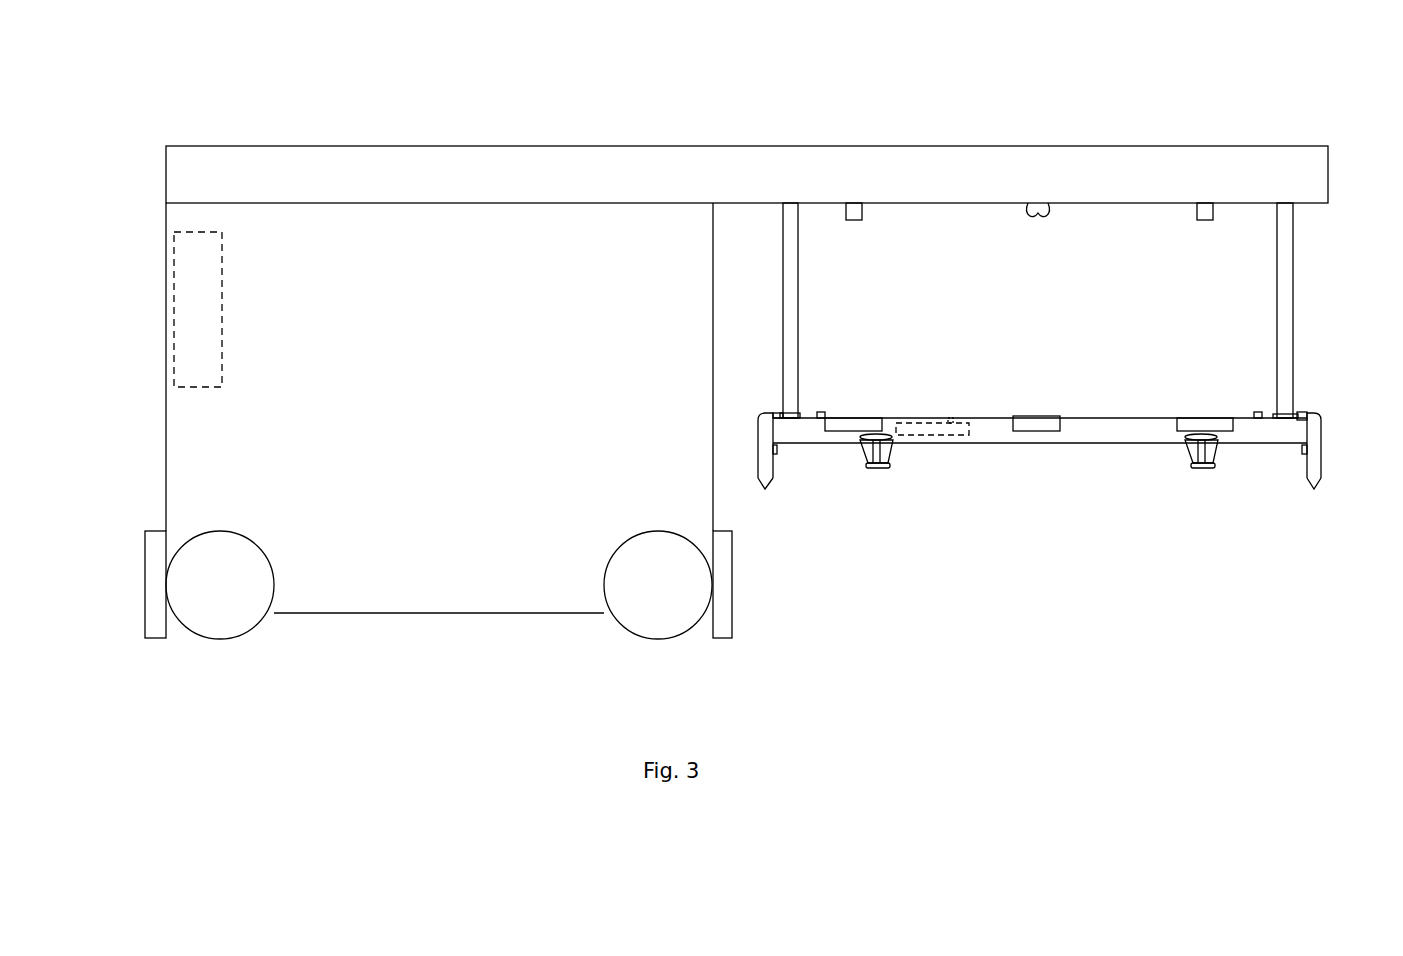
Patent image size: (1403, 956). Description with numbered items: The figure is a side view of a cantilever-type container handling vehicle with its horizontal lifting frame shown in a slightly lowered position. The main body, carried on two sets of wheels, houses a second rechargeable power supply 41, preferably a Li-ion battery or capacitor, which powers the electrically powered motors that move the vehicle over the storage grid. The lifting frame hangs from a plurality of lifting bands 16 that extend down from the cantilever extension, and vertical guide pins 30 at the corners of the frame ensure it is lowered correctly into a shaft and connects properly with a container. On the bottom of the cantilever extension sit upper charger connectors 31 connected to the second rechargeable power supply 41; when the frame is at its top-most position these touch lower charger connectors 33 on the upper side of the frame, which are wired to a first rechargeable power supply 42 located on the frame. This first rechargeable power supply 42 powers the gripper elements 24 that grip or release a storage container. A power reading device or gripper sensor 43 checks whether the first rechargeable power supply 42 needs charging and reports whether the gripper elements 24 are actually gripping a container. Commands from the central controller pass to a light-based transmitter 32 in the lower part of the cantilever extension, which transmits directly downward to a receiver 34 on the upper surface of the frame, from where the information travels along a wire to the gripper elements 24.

The lifting band 16 is at (790, 230).
The gripper element 24 is at (877, 470).
The vertical guide pin 30 is at (765, 480).
The upper charger connector 31 is at (853, 222).
The transmitter 32 is at (1038, 221).
The lower charger connector 33 is at (833, 433).
The receiver 34 is at (1034, 433).
The second rechargeable power supply 41 is at (183, 304).
The first rechargeable power supply 42 is at (922, 438).
The gripper sensor 43 is at (878, 433).